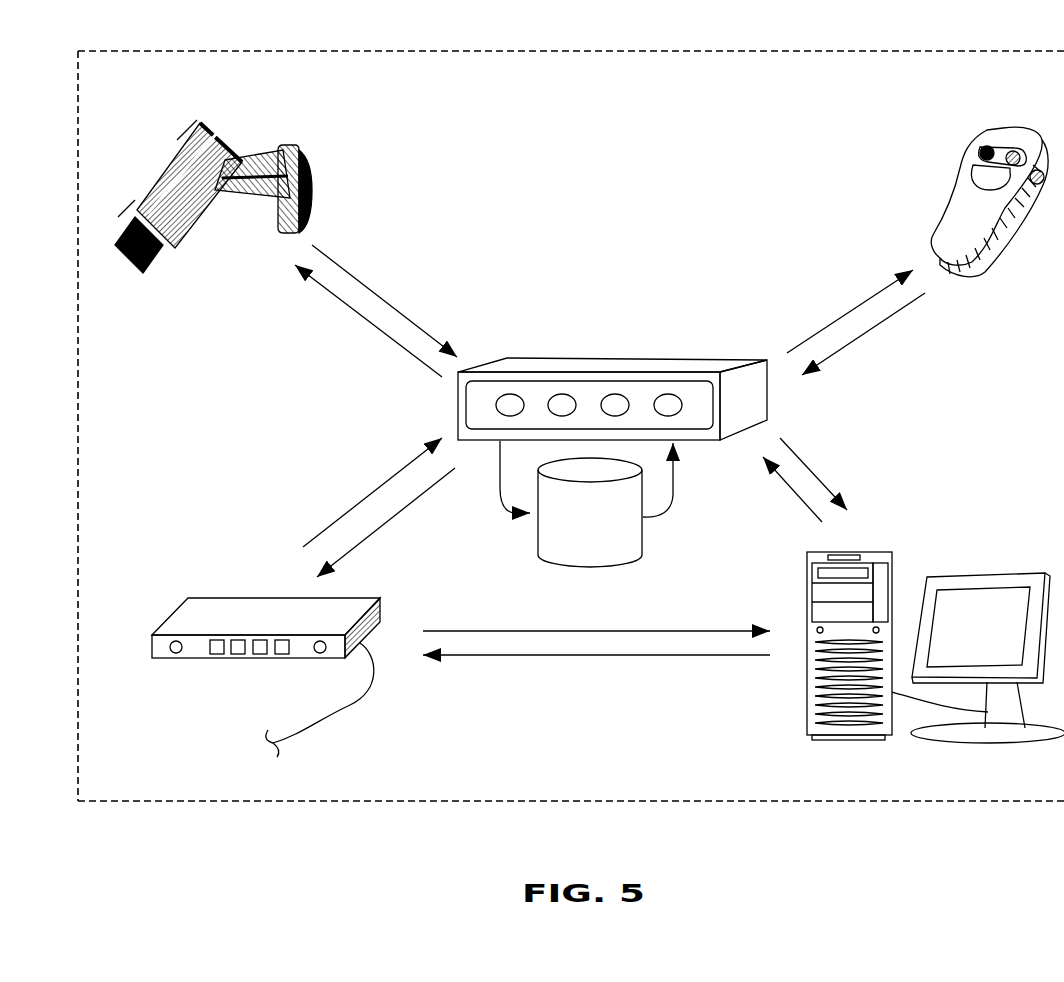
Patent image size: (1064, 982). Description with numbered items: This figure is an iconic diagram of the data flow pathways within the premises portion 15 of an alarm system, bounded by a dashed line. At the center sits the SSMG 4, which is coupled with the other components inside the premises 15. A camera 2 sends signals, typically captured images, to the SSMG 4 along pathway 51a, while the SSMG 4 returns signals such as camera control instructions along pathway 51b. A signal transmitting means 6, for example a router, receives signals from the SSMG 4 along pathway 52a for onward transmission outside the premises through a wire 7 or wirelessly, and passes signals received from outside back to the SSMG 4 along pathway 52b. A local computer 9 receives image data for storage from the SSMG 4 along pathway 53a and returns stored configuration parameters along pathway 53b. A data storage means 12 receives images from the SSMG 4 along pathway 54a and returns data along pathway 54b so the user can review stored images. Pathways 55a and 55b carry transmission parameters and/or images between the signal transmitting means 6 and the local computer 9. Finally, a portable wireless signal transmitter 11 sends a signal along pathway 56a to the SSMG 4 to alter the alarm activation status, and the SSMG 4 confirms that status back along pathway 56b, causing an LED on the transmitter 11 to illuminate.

The camera 2 is at (210, 135).
The SSMG 4 is at (612, 358).
The signal transmitting means 6 is at (220, 597).
The wire 7 is at (322, 723).
The local computer 9 is at (892, 550).
The portable wireless signal transmitter 11 is at (978, 140).
The data storage means 12 is at (590, 512).
The premises 15 is at (872, 801).
The pathway 51a is at (385, 302).
The pathway 51b is at (373, 325).
The pathway 52a is at (355, 550).
The pathway 52b is at (343, 515).
The pathway 53a is at (820, 480).
The pathway 53b is at (813, 517).
The pathway 54a is at (505, 505).
The pathway 54b is at (657, 508).
The pathway 55a is at (592, 630).
The pathway 55b is at (565, 657).
The pathway 56a is at (872, 323).
The pathway 56b is at (843, 313).